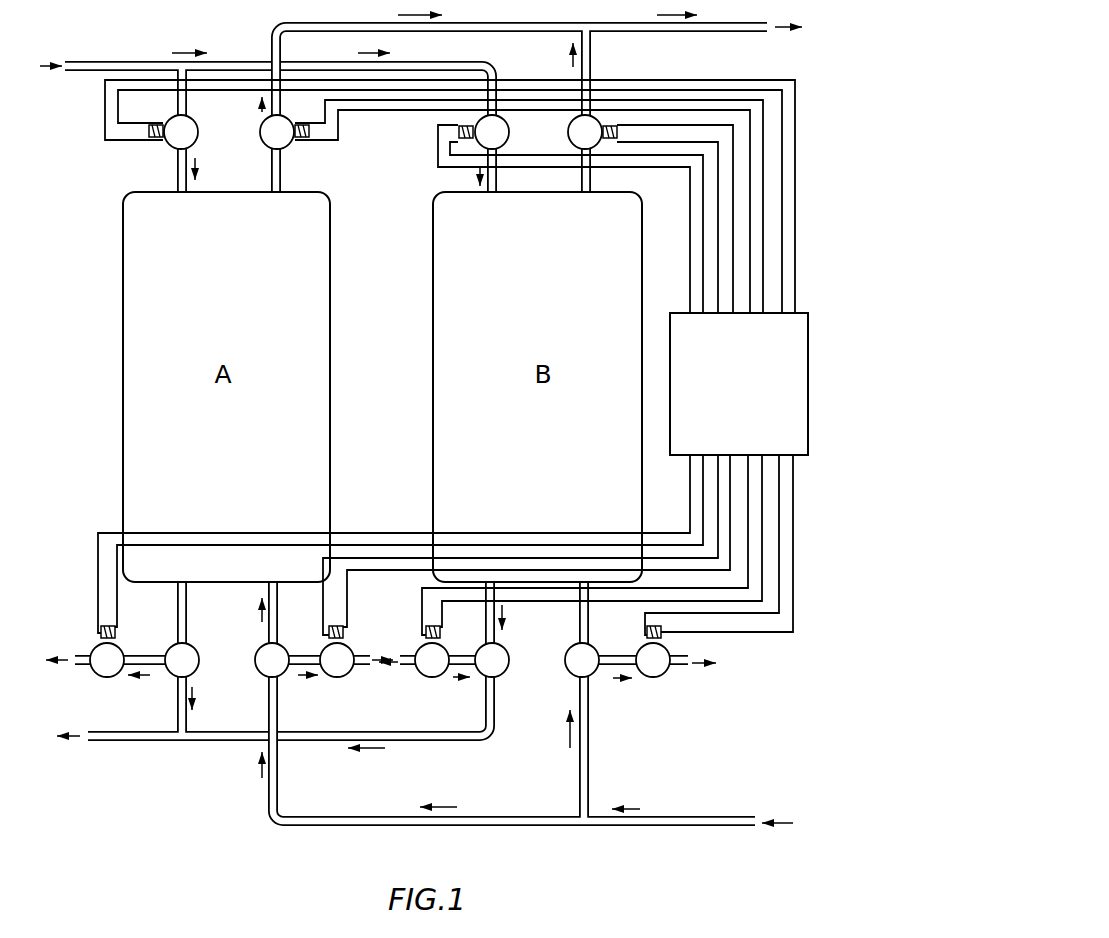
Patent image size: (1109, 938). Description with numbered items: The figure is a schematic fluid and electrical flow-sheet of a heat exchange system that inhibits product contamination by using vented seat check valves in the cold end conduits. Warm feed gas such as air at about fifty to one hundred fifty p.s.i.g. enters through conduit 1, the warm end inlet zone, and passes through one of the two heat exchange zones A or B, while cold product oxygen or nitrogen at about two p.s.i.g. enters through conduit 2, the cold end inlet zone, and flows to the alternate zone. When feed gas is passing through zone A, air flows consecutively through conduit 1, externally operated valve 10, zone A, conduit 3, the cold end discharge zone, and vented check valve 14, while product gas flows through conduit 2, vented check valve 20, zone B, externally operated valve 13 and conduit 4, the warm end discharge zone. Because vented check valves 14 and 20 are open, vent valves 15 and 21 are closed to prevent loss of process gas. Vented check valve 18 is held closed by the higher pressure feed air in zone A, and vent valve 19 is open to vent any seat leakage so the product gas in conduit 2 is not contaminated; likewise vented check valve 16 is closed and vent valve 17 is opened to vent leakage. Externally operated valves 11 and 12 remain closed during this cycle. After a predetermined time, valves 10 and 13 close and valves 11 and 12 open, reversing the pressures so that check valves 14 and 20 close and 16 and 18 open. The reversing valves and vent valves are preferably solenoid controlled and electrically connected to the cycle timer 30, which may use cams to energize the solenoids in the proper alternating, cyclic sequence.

The conduit 1 is at (141, 62).
The conduit 2 is at (352, 818).
The conduit 3 is at (147, 733).
The conduit 4 is at (350, 23).
The externally operated valve 10 is at (190, 136).
The externally operated valve 11 is at (270, 141).
The externally operated valve 12 is at (498, 135).
The externally operated valve 13 is at (581, 126).
The vented check valve 14 is at (177, 673).
The vent valve 15 is at (102, 672).
The vented check valve 16 is at (483, 675).
The vent valve 17 is at (428, 673).
The vented check valve 18 is at (267, 673).
The vent valve 19 is at (337, 673).
The vented check valve 20 is at (573, 675).
The vent valve 21 is at (650, 673).
The cycle timer 30 is at (679, 320).